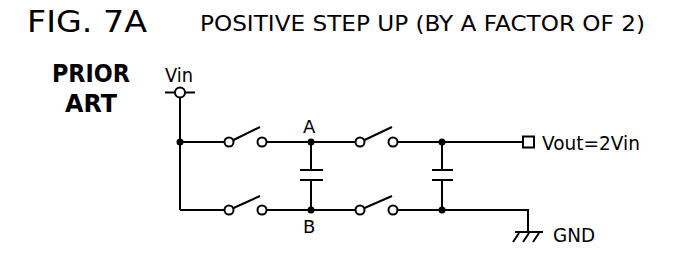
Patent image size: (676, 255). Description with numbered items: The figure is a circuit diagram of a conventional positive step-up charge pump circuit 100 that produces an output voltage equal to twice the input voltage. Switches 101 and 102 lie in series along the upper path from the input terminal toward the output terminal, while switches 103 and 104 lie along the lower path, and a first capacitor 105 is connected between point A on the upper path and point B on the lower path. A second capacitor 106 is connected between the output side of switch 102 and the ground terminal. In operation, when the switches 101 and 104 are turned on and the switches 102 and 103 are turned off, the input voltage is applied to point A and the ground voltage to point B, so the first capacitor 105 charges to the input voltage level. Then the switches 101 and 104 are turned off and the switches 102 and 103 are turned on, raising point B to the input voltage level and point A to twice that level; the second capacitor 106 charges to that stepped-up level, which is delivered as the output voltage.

The charge pump circuit 100 is at (458, 79).
The switch 101 is at (247, 127).
The switch 102 is at (380, 127).
The switch 103 is at (245, 212).
The switch 104 is at (377, 212).
The first capacitor 105 is at (299, 177).
The second capacitor 106 is at (430, 177).